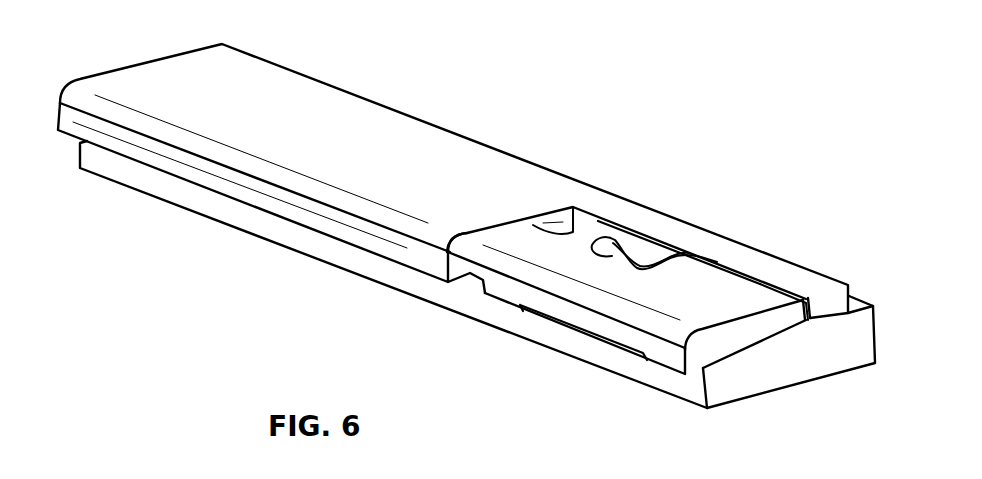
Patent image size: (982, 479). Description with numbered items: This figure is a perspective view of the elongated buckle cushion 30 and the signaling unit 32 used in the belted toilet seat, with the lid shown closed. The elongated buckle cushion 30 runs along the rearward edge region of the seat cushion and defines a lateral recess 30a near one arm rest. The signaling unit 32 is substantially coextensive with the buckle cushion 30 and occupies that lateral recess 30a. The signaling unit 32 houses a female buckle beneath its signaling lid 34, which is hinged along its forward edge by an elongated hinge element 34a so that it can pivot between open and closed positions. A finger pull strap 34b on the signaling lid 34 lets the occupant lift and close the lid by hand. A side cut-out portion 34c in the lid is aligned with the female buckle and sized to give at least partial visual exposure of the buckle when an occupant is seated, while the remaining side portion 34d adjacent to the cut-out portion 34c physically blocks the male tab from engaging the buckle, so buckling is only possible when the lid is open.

The elongated buckle cushion 30 is at (228, 110).
The lateral recess 30a is at (566, 207).
The signaling unit 32 is at (756, 279).
The signaling lid 34 is at (688, 298).
The elongated hinge element 34a is at (590, 332).
The finger pull strap 34b is at (620, 224).
The side cut-out portion 34c is at (612, 238).
The remaining side portion 34d is at (507, 237).